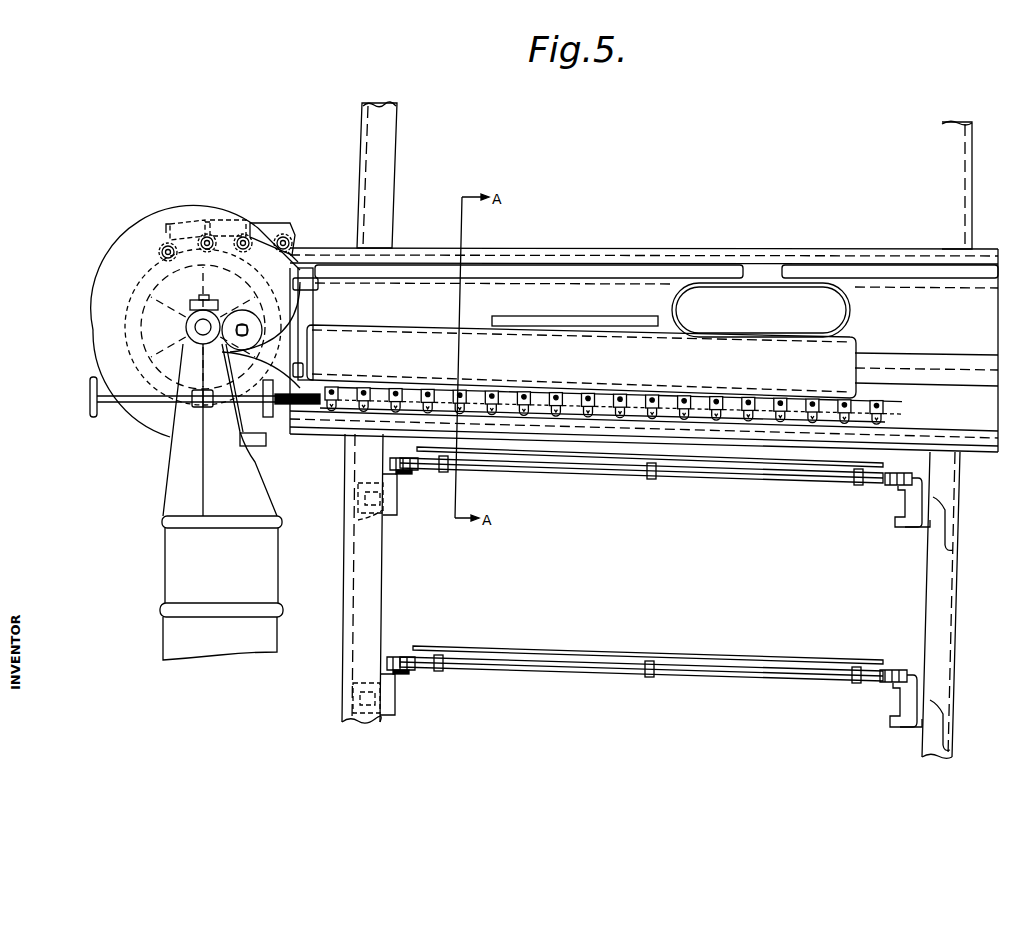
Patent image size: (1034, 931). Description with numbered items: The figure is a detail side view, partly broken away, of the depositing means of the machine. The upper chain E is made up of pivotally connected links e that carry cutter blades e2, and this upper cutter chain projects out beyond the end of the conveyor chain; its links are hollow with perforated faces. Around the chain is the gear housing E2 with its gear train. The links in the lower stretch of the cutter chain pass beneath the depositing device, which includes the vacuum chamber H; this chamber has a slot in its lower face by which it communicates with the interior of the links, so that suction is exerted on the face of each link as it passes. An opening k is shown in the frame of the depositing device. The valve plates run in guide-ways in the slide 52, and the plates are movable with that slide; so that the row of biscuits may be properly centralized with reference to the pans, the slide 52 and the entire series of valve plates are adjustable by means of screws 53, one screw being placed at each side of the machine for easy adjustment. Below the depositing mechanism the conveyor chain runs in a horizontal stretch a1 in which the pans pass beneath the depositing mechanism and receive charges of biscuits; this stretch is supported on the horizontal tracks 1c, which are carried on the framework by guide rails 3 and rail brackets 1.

The vacuum chamber H is at (644, 350).
The opening in frame k is at (761, 310).
The horizontal stretch a1 is at (606, 397).
The guide rail 3 is at (740, 467).
The rail bracket 1 is at (418, 470).
The horizontal tracks 1c is at (402, 483).
The gear housing E2 is at (134, 290).
The links e is at (252, 227).
The cutter blades e2 is at (247, 226).
The upper chain E is at (277, 228).
The screws 53 is at (92, 382).
The slide 52 is at (270, 418).